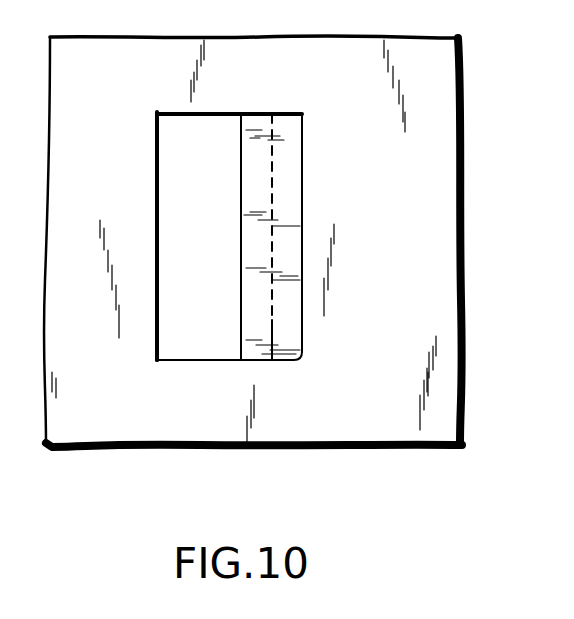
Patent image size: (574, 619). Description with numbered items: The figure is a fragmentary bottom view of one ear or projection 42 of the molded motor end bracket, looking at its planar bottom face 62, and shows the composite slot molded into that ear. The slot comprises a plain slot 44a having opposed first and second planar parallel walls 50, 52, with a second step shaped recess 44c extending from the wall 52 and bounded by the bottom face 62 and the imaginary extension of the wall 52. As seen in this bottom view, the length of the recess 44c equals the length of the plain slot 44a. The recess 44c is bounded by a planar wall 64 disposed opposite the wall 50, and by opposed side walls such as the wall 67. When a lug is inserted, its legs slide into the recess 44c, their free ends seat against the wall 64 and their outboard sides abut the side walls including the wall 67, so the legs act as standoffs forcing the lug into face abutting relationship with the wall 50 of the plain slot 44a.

The ear or projection 42 is at (463, 386).
The plain slot 44a is at (157, 316).
The second step shaped recess 44c is at (272, 326).
The first planar wall 50 is at (225, 224).
The second planar wall 52 is at (242, 143).
The planar bottom face 62 is at (207, 425).
The wall of the recess 64 is at (302, 183).
The opposed wall of the recess 67 is at (290, 116).